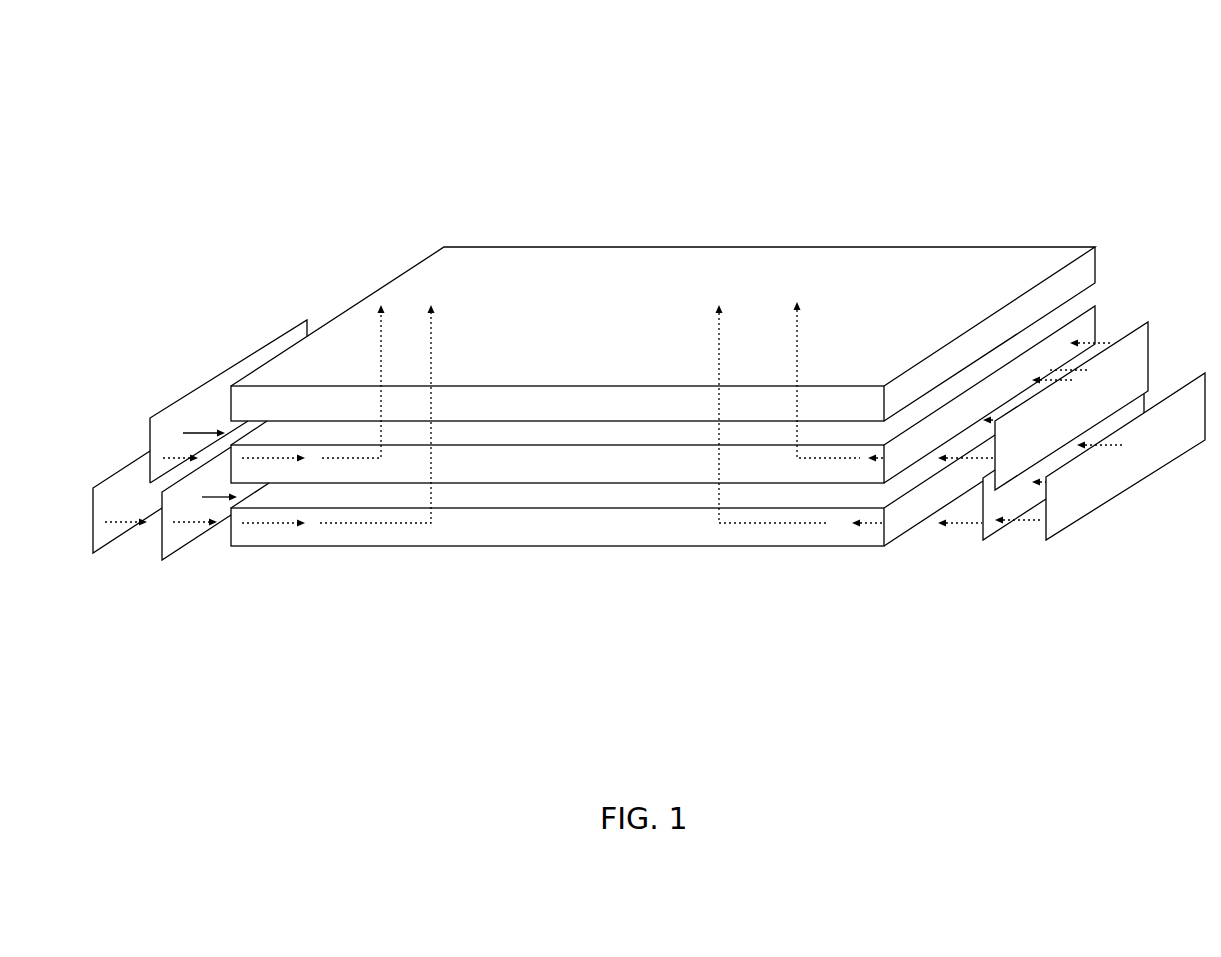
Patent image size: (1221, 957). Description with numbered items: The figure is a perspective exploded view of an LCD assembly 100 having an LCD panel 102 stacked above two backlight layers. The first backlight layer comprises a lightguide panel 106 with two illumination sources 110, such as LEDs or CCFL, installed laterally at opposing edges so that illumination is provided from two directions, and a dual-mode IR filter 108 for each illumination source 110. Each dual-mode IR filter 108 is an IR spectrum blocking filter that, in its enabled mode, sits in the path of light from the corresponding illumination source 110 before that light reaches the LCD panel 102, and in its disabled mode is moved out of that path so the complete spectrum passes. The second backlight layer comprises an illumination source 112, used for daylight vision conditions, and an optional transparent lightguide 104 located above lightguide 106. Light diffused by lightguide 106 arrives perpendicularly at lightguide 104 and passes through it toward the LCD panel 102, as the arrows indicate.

The LCD assembly 100 is at (815, 122).
The LCD panel 102 is at (608, 413).
The lightguide panel 104 is at (608, 473).
The lightguide panel 106 is at (608, 535).
The dual-mode IR filter 108 is at (192, 532).
The illumination source 110 is at (113, 532).
The illumination source 112 is at (176, 424).